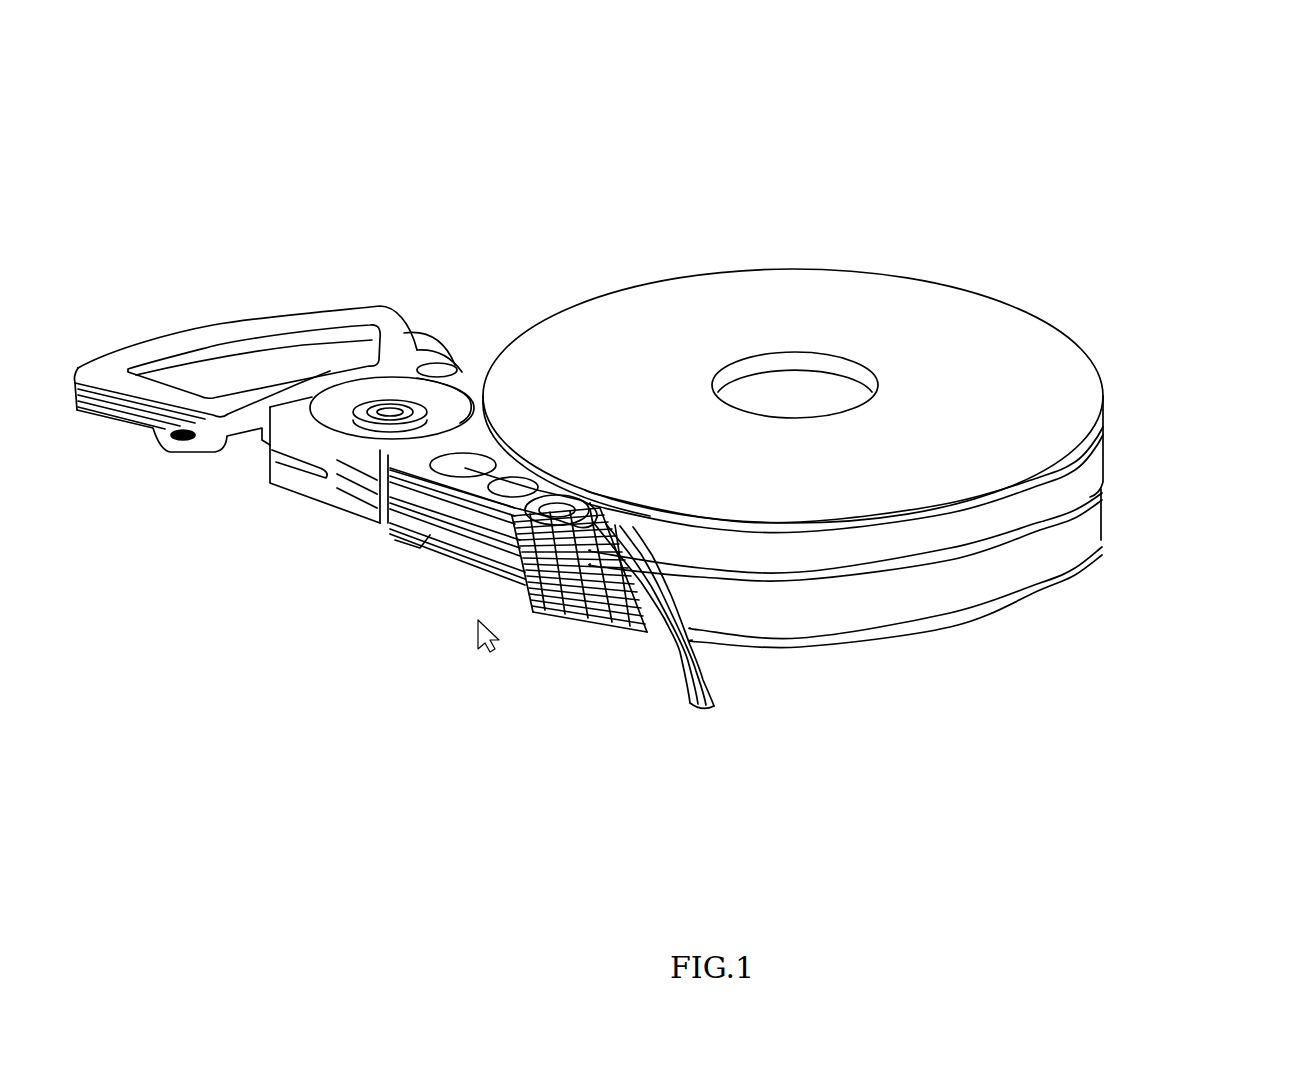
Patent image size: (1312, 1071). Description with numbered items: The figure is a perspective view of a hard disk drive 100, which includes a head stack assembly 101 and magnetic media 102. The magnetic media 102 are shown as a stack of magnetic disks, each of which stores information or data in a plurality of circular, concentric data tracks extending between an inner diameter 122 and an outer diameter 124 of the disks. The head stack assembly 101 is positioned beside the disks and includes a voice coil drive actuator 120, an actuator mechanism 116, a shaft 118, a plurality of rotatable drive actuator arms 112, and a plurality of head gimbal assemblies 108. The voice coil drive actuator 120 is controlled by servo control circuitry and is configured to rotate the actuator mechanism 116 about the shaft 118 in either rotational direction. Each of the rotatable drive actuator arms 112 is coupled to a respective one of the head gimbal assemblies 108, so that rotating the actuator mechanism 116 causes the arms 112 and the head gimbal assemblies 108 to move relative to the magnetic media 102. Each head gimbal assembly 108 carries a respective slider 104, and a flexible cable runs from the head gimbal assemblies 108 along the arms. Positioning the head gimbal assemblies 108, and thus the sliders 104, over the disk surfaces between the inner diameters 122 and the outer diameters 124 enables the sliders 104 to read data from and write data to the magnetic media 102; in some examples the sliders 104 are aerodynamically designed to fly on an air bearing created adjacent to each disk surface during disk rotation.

The hard disk drive 100 is at (1186, 107).
The head stack assembly 101 is at (241, 549).
The magnetic media 102 is at (947, 274).
The slider 104 is at (674, 619).
The head gimbal assembly 108 is at (641, 531).
The rotatable drive actuator arm 112 is at (436, 561).
The actuator mechanism 116 is at (471, 335).
The shaft 118 is at (402, 400).
The voice coil drive actuator 120 is at (217, 318).
The inner diameter 122 is at (791, 411).
The outer diameter 124 is at (740, 270).